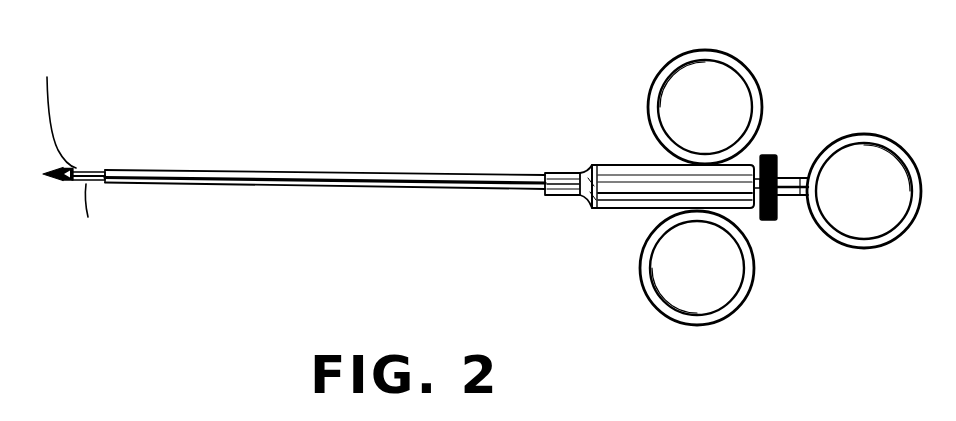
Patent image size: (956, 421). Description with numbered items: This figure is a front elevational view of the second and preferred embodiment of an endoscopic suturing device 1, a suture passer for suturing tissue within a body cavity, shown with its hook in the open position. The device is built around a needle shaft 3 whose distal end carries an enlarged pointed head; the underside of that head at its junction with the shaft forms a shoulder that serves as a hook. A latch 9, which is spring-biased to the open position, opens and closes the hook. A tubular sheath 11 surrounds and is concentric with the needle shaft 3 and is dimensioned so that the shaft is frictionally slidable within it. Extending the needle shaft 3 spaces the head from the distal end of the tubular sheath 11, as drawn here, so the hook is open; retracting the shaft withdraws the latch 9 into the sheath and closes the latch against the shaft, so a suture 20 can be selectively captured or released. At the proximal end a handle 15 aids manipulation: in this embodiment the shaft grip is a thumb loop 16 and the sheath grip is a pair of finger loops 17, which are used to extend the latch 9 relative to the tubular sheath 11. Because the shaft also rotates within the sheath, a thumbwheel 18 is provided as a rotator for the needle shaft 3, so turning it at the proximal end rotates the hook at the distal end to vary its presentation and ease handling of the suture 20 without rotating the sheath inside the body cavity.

The endoscopic suturing device 1 is at (442, 173).
The needle shaft 3 is at (94, 185).
The latch 9 is at (86, 171).
The tubular sheath 11 is at (200, 172).
The handle 15 is at (849, 134).
The thumb loop 16 is at (848, 244).
The finger loops 17 is at (746, 79).
The thumbwheel 18 is at (770, 155).
The suture 20 is at (52, 93).